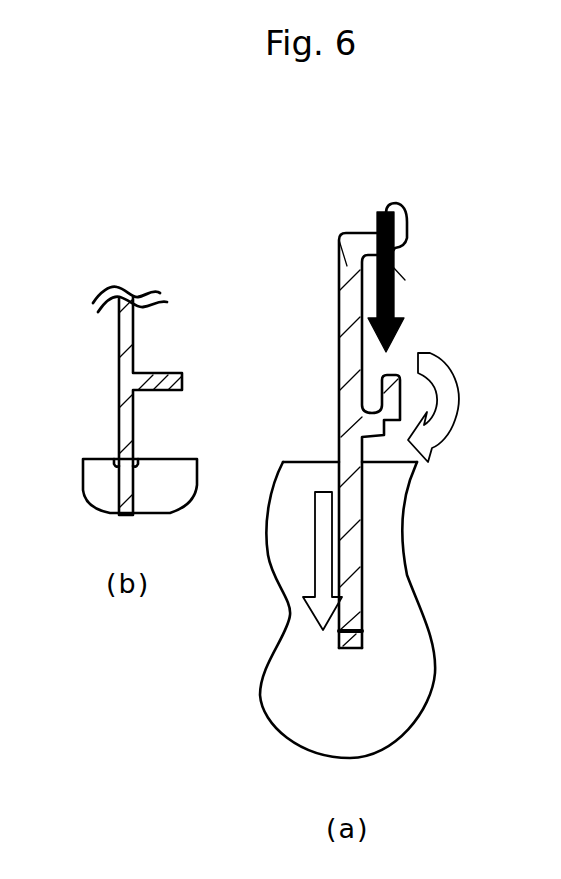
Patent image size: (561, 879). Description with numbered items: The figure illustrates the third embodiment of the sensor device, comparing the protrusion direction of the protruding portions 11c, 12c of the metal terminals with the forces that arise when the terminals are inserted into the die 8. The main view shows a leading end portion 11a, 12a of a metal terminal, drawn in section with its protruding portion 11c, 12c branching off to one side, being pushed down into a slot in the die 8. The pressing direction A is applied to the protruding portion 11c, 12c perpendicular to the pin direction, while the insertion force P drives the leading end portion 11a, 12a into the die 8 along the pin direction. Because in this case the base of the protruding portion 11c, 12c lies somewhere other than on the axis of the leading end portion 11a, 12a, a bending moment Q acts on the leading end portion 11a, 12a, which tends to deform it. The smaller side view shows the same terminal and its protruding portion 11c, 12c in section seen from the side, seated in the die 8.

The die 8 is at (417, 660).
The leading end portion 11a is at (293, 401).
The leading end portion 12a is at (335, 237).
The protruding portion 11c is at (236, 379).
The protruding portion 12c is at (380, 383).
The pressing direction A is at (386, 249).
The insertion force P is at (322, 581).
The bending moment Q is at (452, 407).